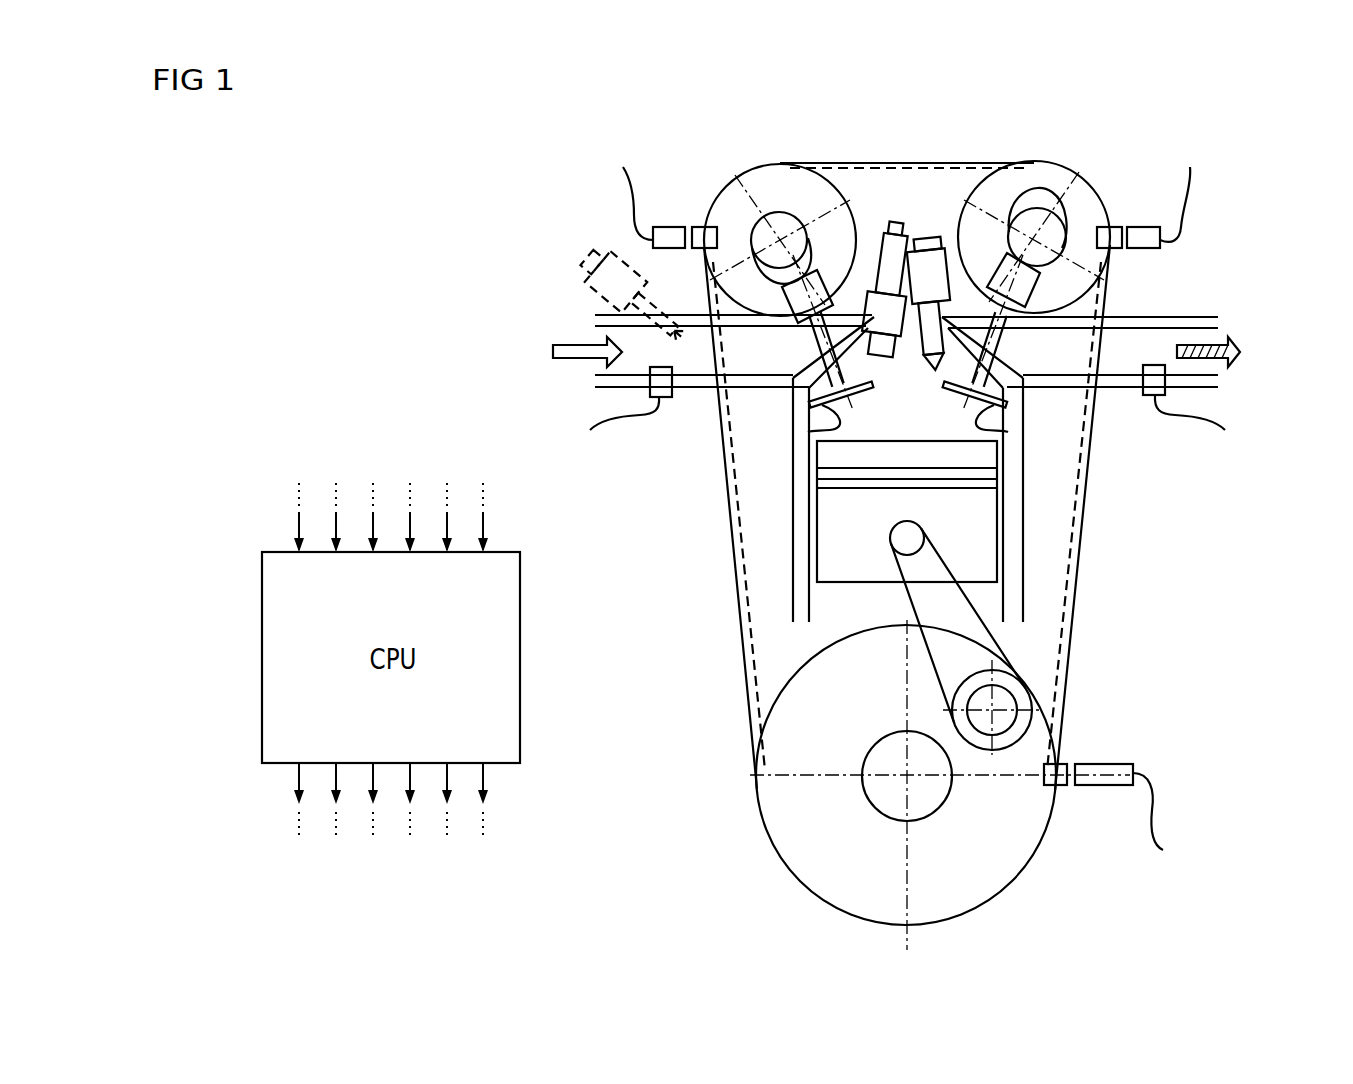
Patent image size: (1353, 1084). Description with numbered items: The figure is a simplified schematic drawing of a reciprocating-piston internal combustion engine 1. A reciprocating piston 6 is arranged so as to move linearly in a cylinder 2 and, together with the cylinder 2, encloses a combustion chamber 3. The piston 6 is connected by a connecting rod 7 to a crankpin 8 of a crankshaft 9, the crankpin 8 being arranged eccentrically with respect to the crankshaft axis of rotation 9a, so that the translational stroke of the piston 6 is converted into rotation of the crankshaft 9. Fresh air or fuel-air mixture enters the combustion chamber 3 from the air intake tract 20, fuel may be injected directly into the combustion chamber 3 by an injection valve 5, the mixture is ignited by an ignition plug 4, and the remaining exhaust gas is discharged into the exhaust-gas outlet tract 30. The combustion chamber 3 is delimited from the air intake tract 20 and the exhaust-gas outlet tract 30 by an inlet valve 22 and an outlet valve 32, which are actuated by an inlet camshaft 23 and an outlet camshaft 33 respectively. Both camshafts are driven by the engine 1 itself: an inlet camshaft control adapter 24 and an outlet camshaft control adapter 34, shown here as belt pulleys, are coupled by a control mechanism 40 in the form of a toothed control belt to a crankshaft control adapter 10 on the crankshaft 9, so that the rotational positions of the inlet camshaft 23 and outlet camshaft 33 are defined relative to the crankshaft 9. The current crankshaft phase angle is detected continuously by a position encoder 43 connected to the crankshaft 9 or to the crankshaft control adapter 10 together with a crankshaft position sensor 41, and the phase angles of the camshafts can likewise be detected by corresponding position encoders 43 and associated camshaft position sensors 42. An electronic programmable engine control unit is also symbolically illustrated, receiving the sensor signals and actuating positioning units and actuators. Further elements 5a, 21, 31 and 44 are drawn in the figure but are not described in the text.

The internal combustion engine 1 is at (1072, 130).
The cylinder 2 is at (800, 530).
The combustion chamber 3 is at (905, 424).
The ignition plug 4 is at (885, 312).
The injection valve 5 is at (940, 245).
The port fuel injector 5a is at (597, 252).
The reciprocating piston 6 is at (975, 520).
The connecting rod 7 is at (975, 650).
The crankpin 8 is at (1010, 690).
The crankshaft 9 is at (926, 793).
The crankshaft axis of rotation 9a is at (906, 777).
The crankshaft control adapter 10 is at (847, 847).
The air intake tract 20 is at (630, 346).
The intake pipe 21 is at (578, 358).
The inlet valve 22 is at (845, 414).
The inlet camshaft 23 is at (762, 228).
The inlet camshaft control adapter 24 is at (776, 192).
The exhaust-gas outlet tract 30 is at (1140, 332).
The exhaust pipe 31 is at (1215, 378).
The outlet valve 32 is at (985, 412).
The outlet camshaft 33 is at (1050, 228).
The outlet camshaft control adapter 34 is at (1018, 192).
The control mechanism 40 is at (905, 162).
The crankshaft position sensor 41 is at (1103, 785).
The camshaft position sensor 42 is at (650, 240).
The position encoder 43 is at (702, 227).
The gas sensor 44 is at (648, 389).